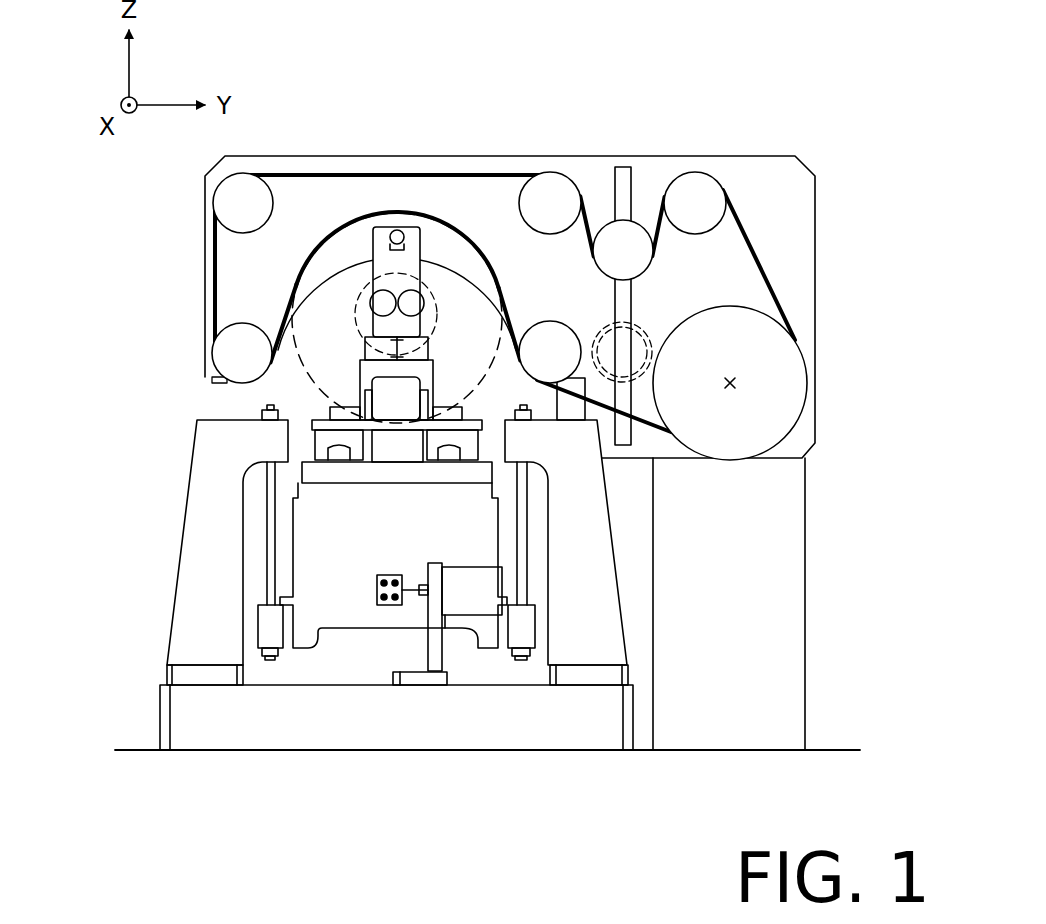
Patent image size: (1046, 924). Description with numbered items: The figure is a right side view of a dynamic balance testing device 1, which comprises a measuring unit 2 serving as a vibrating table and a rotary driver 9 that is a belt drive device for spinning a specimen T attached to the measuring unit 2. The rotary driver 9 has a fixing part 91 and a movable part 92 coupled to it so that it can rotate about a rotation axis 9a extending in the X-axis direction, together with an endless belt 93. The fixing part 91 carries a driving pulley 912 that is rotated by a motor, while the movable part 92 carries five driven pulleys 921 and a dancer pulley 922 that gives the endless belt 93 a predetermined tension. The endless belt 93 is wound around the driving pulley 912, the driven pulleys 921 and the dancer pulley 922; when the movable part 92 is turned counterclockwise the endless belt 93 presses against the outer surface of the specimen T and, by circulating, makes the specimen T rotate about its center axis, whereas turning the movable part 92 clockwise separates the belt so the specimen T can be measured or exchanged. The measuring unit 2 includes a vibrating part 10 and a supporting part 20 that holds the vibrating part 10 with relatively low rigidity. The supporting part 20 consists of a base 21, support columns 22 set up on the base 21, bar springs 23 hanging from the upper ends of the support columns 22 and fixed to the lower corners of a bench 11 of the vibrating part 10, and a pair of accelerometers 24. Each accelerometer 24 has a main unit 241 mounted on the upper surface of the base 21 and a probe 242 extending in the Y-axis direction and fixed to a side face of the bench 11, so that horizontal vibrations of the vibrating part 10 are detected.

The dynamic balance testing device 1 is at (806, 10).
The measuring unit 2 is at (334, 634).
The rotary driver 9 is at (510, 307).
The rotation axis 9a is at (735, 383).
The vibrating part 10 is at (500, 662).
The bench 11 is at (343, 618).
The supporting part 20 is at (334, 577).
The base 21 is at (158, 728).
The support column 22 is at (167, 640).
The bar spring 23 is at (265, 534).
The accelerometer 24 is at (400, 713).
The main unit 241 is at (468, 607).
The probe 242 is at (415, 595).
The fixing part 91 is at (798, 543).
The movable part 92 is at (812, 384).
The endless belt 93 is at (372, 175).
The driving pulley 912 is at (780, 340).
The driven pulley 921 is at (559, 184).
The dancer pulley 922 is at (657, 268).
The specimen T is at (505, 258).